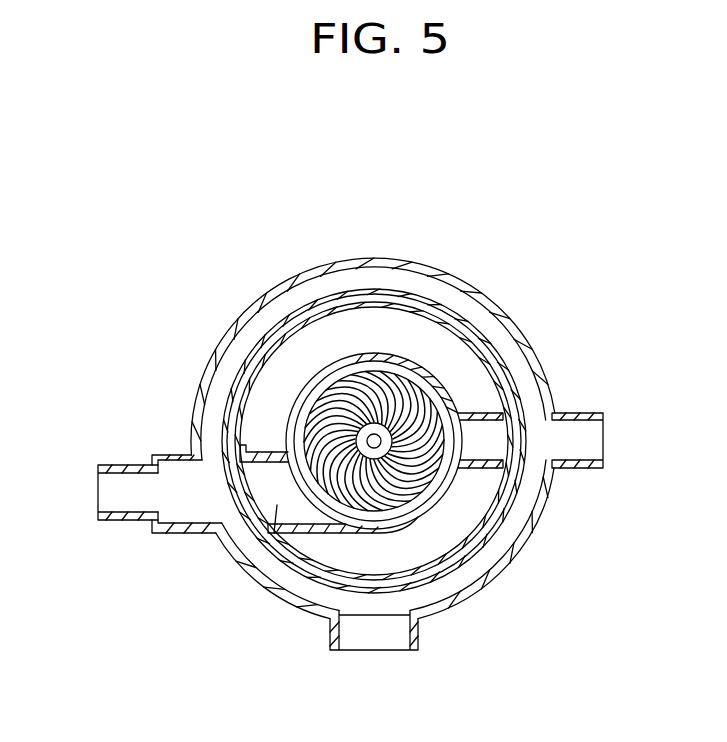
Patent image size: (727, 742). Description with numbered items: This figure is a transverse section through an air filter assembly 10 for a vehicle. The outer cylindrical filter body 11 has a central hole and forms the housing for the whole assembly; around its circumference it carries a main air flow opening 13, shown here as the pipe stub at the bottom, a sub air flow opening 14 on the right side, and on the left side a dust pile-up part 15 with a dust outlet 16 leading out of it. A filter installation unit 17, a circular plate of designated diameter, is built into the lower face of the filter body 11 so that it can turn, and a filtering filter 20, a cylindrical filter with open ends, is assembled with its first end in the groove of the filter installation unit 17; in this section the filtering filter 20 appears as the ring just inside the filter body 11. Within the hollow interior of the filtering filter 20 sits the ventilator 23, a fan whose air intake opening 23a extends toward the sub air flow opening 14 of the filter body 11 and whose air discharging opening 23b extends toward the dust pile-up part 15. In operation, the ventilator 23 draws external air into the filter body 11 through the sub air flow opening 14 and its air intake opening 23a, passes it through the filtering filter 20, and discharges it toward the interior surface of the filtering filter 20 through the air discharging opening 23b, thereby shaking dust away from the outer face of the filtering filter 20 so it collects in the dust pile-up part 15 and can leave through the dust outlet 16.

The air filter assembly 10 is at (144, 186).
The filter body 11 is at (367, 258).
The main air flow opening 13 is at (383, 637).
The sub air flow opening 14 is at (590, 444).
The dust pile-up part 15 is at (162, 455).
The dust outlet 16 is at (118, 504).
The filter installation unit 17 is at (440, 533).
The filtering filter 20 is at (272, 332).
The ventilator 23 is at (412, 358).
The air intake opening 23a is at (495, 412).
The air discharging opening 23b is at (270, 540).